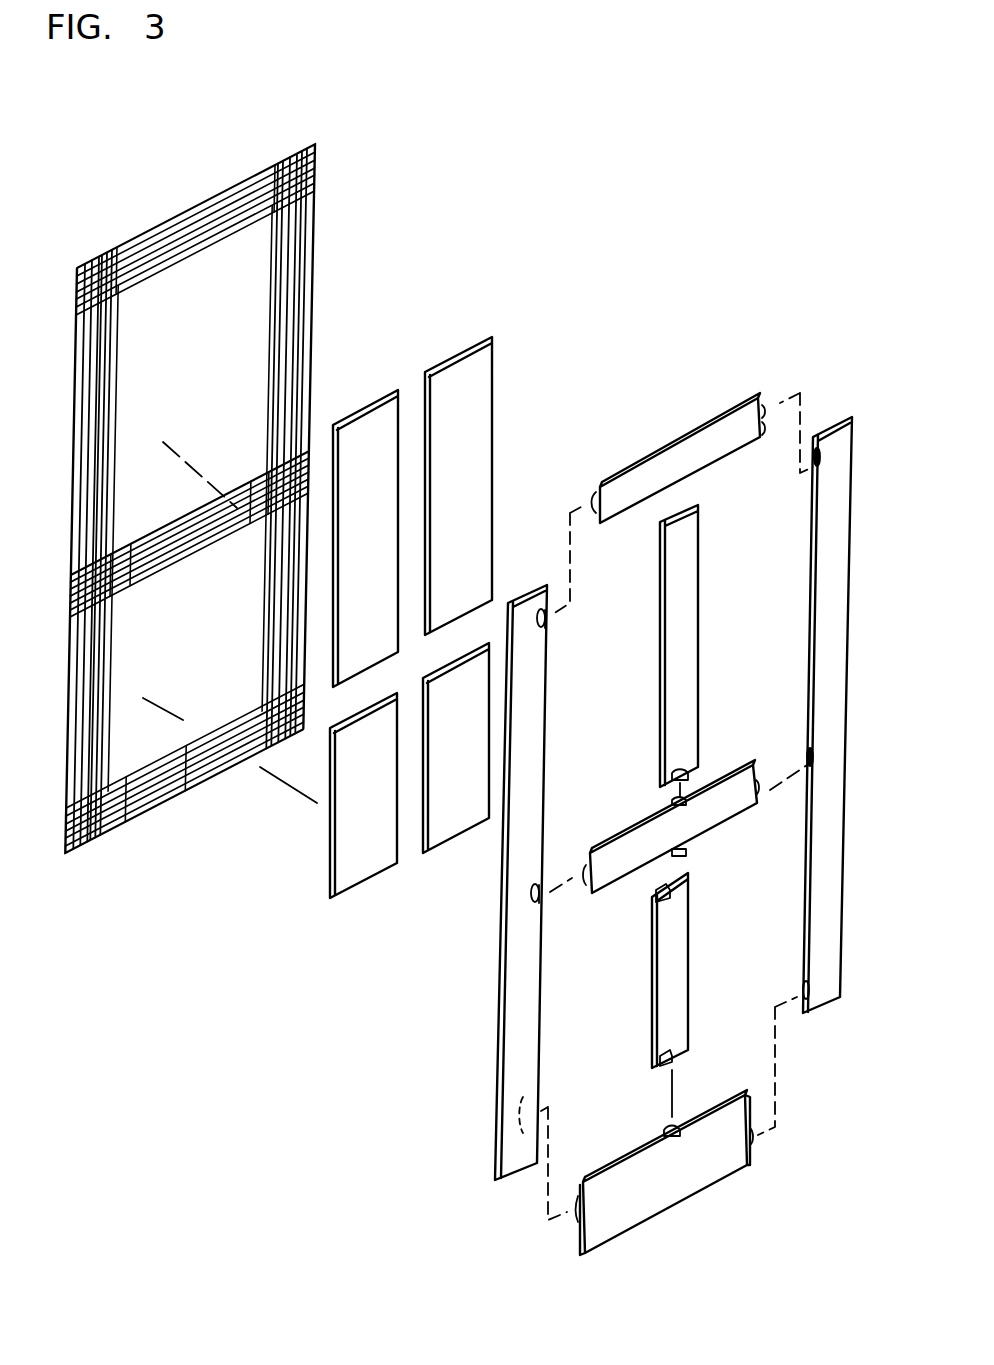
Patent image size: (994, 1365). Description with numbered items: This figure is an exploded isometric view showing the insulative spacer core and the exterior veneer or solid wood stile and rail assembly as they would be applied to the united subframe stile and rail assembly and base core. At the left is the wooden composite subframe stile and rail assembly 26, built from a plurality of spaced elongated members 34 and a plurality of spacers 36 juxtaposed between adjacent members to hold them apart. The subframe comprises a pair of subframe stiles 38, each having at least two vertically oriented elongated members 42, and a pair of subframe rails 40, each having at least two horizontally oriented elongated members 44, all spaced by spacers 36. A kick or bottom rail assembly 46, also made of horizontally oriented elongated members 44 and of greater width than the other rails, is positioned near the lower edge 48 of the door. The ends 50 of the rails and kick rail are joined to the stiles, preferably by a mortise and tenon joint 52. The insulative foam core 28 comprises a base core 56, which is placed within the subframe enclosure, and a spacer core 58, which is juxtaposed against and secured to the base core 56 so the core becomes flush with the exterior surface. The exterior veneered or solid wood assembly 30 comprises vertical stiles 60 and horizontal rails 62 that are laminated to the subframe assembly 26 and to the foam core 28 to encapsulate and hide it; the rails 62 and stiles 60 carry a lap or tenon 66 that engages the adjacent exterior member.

The subframe stile and rail assembly 26 is at (55, 812).
The insulative foam core 28 is at (193, 233).
The exterior veneered or solid wood stile, rail, and raised panel assembly 30 is at (640, 812).
The elongated members 34 is at (250, 180).
The spacers 36 is at (290, 150).
The subframe stiles 38 is at (318, 356).
The subframe rails 40 is at (212, 188).
The vertically oriented elongated members 42 is at (116, 356).
The horizontally oriented elongated members 44 is at (168, 542).
The kick or bottom rail assembly 46 is at (247, 775).
The lower edge 48 is at (155, 850).
The ends of subframe rails 50 is at (313, 150).
The mortise and tenon joint 52 is at (285, 165).
The base core 56 is at (233, 227).
The spacer core 58 is at (390, 530).
The exterior veneered or solid wood stile 60 is at (680, 690).
The exterior veneered or solid wood rail 62 is at (653, 460).
The lap or tenon 66 is at (590, 497).